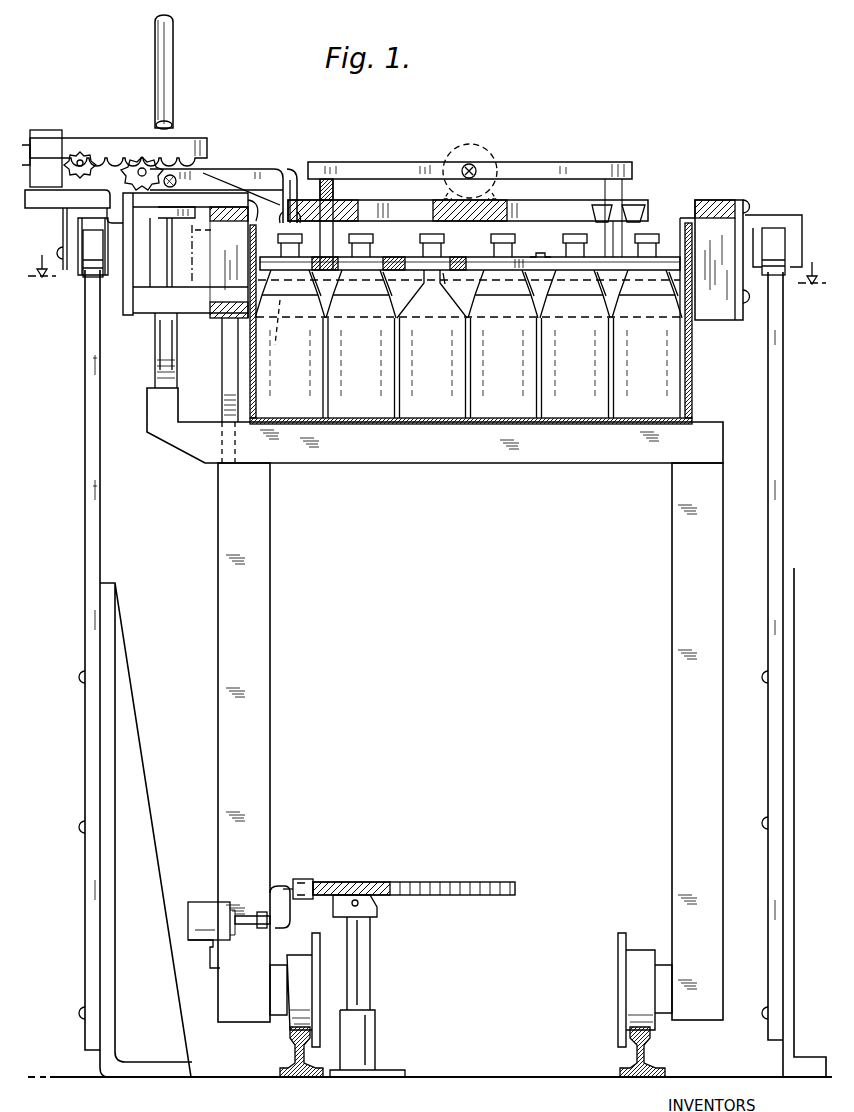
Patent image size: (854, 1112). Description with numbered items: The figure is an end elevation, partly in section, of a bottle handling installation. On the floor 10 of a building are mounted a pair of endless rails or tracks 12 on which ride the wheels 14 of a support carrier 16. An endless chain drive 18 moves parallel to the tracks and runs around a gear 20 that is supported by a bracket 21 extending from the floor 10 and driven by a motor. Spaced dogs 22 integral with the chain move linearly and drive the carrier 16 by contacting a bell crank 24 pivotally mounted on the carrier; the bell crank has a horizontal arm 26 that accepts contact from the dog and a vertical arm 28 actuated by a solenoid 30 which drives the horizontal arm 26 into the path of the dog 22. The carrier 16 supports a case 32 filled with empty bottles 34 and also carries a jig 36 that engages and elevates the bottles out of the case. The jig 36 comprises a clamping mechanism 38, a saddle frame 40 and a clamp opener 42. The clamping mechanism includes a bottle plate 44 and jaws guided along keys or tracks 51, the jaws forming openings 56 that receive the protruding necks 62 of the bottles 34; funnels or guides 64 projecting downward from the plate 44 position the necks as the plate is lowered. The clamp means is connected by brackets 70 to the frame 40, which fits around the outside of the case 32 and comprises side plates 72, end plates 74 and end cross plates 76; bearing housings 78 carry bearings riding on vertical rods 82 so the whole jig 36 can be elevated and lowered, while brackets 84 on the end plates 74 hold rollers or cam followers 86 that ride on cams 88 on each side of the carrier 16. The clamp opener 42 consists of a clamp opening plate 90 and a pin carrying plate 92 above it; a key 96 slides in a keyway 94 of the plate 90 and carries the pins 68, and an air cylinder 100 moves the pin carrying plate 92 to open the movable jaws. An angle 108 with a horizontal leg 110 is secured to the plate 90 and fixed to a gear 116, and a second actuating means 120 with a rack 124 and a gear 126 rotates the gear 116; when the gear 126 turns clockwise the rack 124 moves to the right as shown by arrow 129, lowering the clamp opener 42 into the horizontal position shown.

The floor 10 is at (452, 1100).
The endless rails or tracks 12 is at (285, 1040).
The wheels 14 is at (322, 945).
The support carrier 16 is at (270, 585).
The endless chain drive 18 is at (430, 881).
The gear 20 is at (348, 894).
The bracket 21 is at (372, 982).
The dogs 22 is at (305, 878).
The bell crank 24 is at (268, 893).
The horizontal arm 26 is at (290, 878).
The vertical arm 28 is at (272, 928).
The solenoid 30 is at (200, 900).
The case 32 is at (515, 462).
The bottles 34 is at (632, 405).
The jig 36 is at (649, 161).
The clamping mechanism 38 is at (529, 256).
The saddle frame 40 is at (711, 329).
The clamp opener 42 is at (589, 156).
The bottle plate 44 is at (510, 291).
The keys or tracks 51 is at (400, 264).
The openings 56 is at (462, 264).
The protruding necks 62 is at (437, 240).
The funnels or guides 64 is at (358, 292).
The pins 68 is at (335, 182).
The brackets 70 is at (264, 220).
The side plates 72 is at (302, 302).
The end plates 74 is at (737, 200).
The end cross plates 76 is at (712, 199).
The bearing housings 78 is at (150, 215).
The vertical members or rods 82 is at (155, 30).
The brackets 84 is at (62, 228).
The rollers or cam followers 86 is at (90, 280).
The cams 88 is at (95, 420).
The clamp opening plate 90 is at (383, 200).
The pin carrying plate 92 is at (368, 163).
The keyway 94 is at (630, 213).
The key 96 is at (312, 198).
The air cylinder 100 is at (478, 142).
The angle 108 is at (250, 160).
The horizontal leg 110 is at (280, 169).
The gear 116 is at (125, 176).
The second actuating means 120 is at (124, 123).
The rack 124 is at (93, 142).
The gear 126 is at (75, 150).
The arrow 129 is at (222, 143).